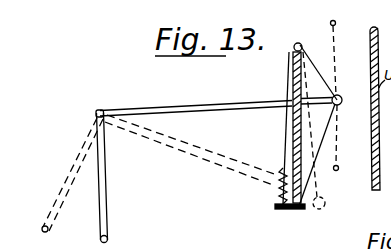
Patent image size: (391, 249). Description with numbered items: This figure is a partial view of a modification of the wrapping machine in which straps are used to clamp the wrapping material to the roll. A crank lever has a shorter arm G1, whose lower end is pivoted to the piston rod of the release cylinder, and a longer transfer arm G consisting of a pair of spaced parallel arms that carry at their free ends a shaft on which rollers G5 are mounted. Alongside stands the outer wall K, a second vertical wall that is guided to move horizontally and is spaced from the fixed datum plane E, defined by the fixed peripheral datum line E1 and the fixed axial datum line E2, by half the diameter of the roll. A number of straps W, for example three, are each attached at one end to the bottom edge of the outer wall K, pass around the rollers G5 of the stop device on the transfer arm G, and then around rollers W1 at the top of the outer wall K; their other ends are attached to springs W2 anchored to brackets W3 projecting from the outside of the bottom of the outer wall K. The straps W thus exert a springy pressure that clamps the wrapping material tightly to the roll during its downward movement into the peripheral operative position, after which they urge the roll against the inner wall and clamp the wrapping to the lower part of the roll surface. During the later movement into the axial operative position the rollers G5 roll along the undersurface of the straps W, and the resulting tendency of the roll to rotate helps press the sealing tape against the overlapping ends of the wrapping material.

The transfer arm G is at (193, 101).
The shorter arm G1 is at (104, 195).
The rollers G5 is at (342, 106).
The outer wall K is at (292, 76).
The straps W is at (314, 67).
The rollers at the top of the outer wall W1 is at (294, 44).
The springs W2 is at (276, 183).
The brackets W3 is at (287, 210).
The fixed datum plane E is at (337, 70).
The fixed peripheral datum line E1 is at (335, 23).
The fixed axial datum line E2 is at (338, 170).